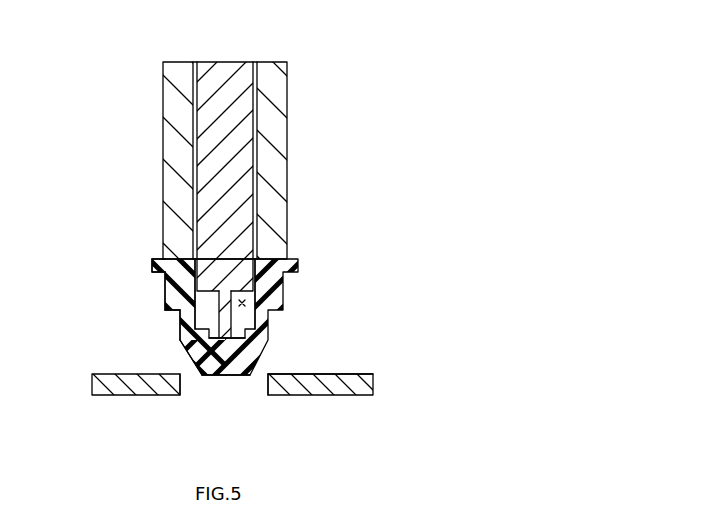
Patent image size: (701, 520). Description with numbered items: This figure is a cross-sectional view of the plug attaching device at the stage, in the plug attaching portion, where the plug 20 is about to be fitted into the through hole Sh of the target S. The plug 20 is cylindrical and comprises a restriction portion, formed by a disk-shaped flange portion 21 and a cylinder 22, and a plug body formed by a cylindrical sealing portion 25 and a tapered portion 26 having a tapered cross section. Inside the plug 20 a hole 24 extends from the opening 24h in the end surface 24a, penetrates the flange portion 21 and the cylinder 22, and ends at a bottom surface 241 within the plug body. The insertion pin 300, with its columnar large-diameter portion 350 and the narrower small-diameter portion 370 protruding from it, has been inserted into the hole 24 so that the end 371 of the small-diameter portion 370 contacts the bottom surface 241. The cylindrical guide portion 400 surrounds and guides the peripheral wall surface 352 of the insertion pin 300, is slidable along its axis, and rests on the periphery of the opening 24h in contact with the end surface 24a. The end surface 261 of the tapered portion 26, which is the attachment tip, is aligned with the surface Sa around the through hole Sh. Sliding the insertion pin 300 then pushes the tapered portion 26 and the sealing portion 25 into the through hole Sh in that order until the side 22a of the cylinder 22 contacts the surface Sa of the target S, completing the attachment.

The insertion pin 300 is at (242, 183).
The guide portion 400 is at (298, 94).
The large-diameter portion 350 is at (253, 151).
The peripheral wall surface 352 is at (195, 125).
The small-diameter portion 370 is at (264, 328).
The end of small-diameter portion 371 is at (238, 377).
The plug 20 is at (308, 266).
The flange portion 21 is at (152, 264).
The cylinder 22 is at (170, 292).
The side of cylinder 22a is at (168, 315).
The hole 24 is at (245, 303).
The end surface 24a is at (158, 258).
The opening 24h is at (253, 247).
The bottom surface 241 is at (222, 376).
The sealing portion 25 is at (183, 324).
The tapered portion 26 is at (192, 362).
The end surface of tapered portion 261 is at (207, 376).
The target S is at (348, 396).
The surface of target Sa is at (366, 375).
The through hole Sh is at (268, 374).